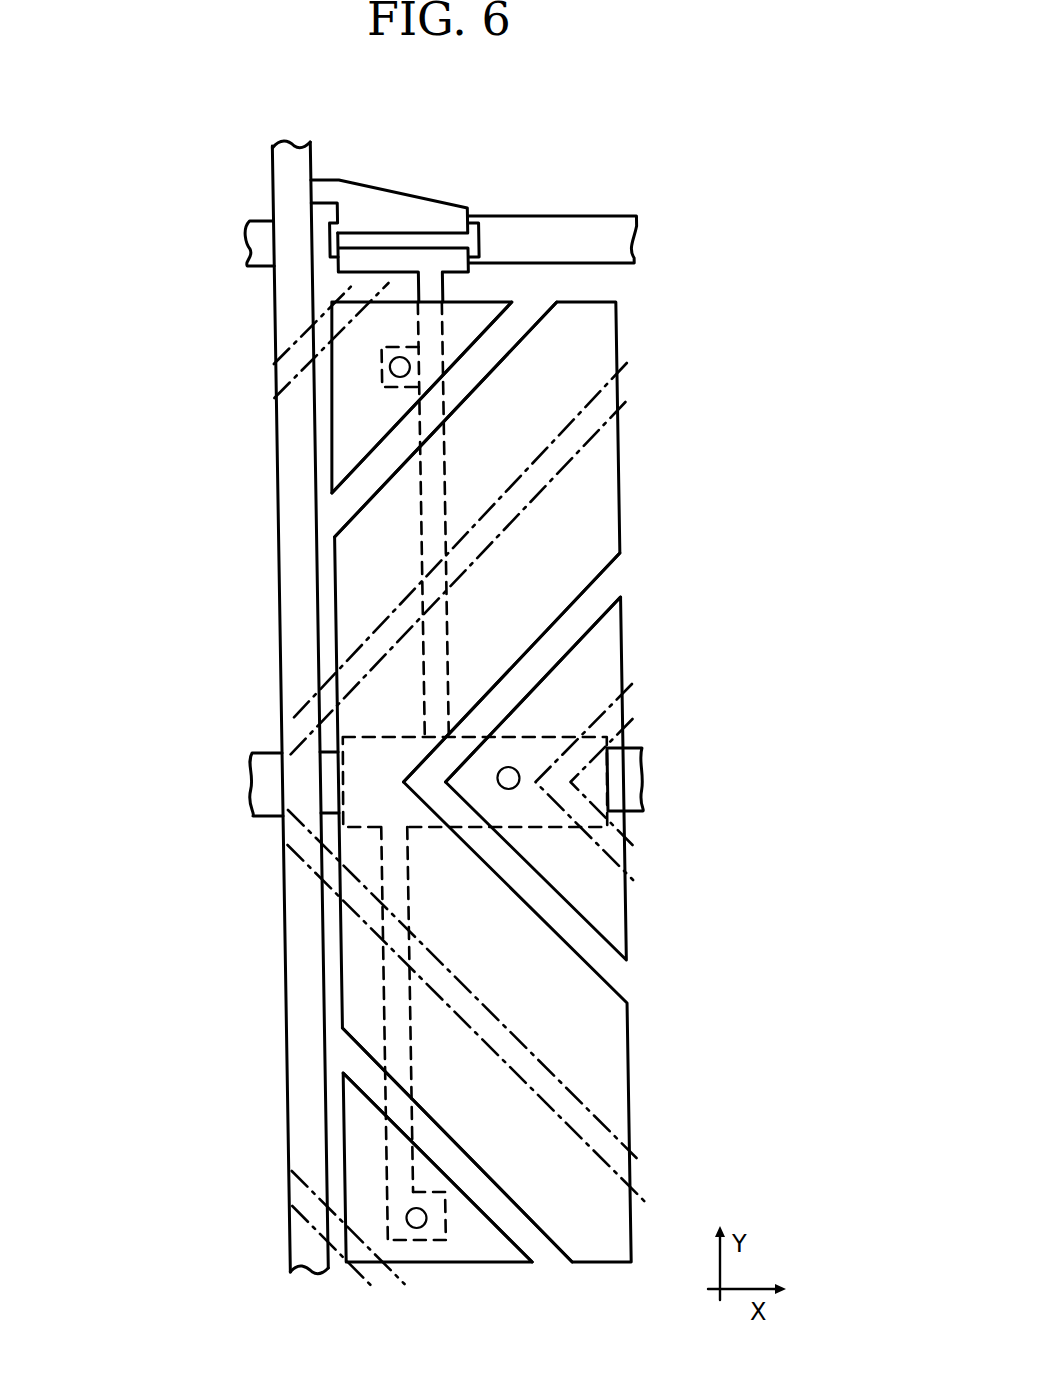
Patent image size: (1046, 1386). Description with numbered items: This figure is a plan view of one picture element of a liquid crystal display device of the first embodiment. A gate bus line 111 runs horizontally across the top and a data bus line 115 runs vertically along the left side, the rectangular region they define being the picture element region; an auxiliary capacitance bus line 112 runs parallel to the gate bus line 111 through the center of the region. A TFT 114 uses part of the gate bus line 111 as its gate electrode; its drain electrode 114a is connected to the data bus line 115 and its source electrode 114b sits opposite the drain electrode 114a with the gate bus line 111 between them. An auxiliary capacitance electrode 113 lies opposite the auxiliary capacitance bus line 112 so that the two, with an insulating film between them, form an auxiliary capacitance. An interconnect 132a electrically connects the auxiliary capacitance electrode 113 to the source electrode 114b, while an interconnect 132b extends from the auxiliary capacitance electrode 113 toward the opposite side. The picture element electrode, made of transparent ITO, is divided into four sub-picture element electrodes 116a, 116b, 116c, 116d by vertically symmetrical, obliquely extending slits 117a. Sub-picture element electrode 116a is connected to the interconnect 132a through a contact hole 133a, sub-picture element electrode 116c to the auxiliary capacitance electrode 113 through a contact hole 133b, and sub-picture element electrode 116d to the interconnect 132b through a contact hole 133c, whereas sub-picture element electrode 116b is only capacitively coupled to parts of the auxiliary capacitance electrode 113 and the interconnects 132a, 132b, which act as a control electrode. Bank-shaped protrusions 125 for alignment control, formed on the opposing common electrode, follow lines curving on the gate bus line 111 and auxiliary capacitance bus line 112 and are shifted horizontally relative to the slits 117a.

The gate bus line 111 is at (253, 240).
The auxiliary capacitance bus line 112 is at (258, 772).
The auxiliary capacitance electrode 113 is at (537, 832).
The TFT 114 is at (427, 208).
The drain electrode 114a is at (385, 195).
The source electrode 114b is at (458, 255).
The data bus line 115 is at (293, 141).
The sub-picture element electrode 116a is at (337, 400).
The sub-picture element electrode 116b is at (342, 598).
The sub-picture element electrode 116c is at (610, 657).
The sub-picture element electrode 116d is at (355, 1150).
The slit 117a is at (342, 505).
The bank-shaped protrusion 125 is at (565, 463).
The interconnect 132a is at (452, 475).
The interconnect 132b is at (383, 982).
The contact hole 133a is at (410, 367).
The contact hole 133b is at (510, 767).
The contact hole 133c is at (423, 1213).